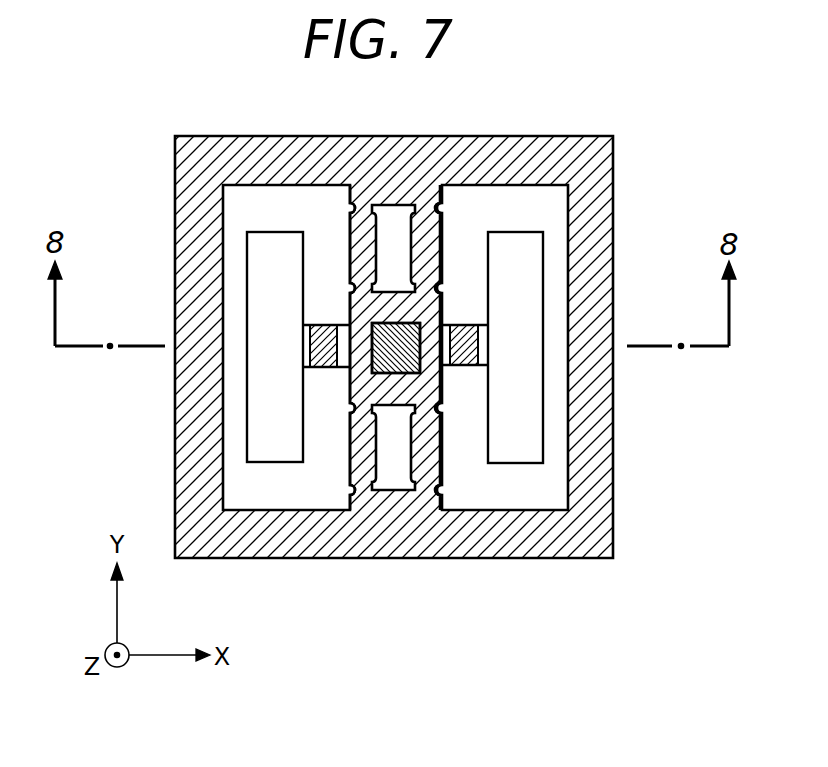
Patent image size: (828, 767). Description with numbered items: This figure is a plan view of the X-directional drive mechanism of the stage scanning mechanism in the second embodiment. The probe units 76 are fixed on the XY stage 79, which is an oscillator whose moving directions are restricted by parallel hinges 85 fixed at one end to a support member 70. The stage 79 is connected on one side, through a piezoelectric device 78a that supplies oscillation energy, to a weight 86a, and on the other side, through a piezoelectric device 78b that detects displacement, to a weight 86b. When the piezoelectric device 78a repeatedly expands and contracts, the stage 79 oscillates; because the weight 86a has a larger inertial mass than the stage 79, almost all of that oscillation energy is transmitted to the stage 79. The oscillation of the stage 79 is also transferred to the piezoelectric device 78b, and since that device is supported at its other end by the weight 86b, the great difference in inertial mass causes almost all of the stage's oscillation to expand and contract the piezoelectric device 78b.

The support member 70 is at (545, 528).
The probe units 76 is at (393, 335).
The piezoelectric device for supplying oscillation energy 78a is at (325, 362).
The piezoelectric device for detecting displacement 78b is at (460, 368).
The XY stage 79 is at (442, 300).
The parallel hinges 85 is at (353, 227).
The weight 86a is at (258, 415).
The weight 86b is at (520, 438).